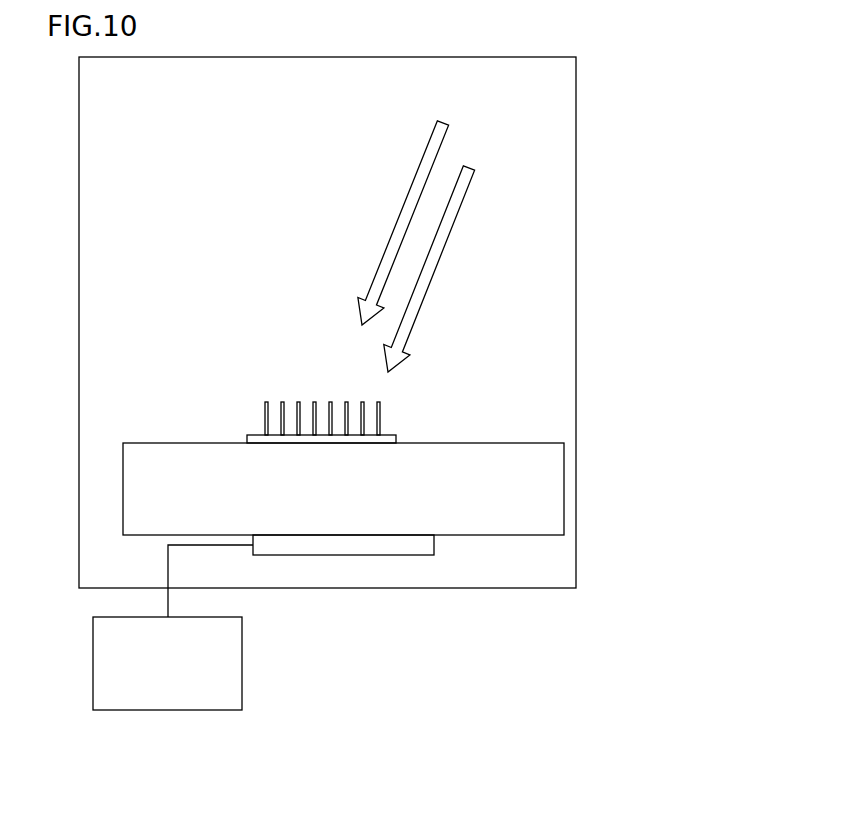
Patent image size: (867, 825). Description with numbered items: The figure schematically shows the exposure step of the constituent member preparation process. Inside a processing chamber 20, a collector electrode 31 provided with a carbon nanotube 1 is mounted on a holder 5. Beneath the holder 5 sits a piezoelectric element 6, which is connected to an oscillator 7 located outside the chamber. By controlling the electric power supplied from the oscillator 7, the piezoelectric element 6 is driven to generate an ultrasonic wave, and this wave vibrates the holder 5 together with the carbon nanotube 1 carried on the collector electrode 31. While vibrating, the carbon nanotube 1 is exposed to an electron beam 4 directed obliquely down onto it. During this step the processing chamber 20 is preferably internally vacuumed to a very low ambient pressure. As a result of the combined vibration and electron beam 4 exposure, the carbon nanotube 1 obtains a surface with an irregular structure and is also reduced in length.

The processing chamber 20 is at (577, 95).
The electron beam 4 is at (447, 141).
The carbon nanotube 1 is at (280, 408).
The collector electrode 31 is at (397, 440).
The holder 5 is at (538, 457).
The piezoelectric element 6 is at (413, 545).
The oscillator 7 is at (228, 666).